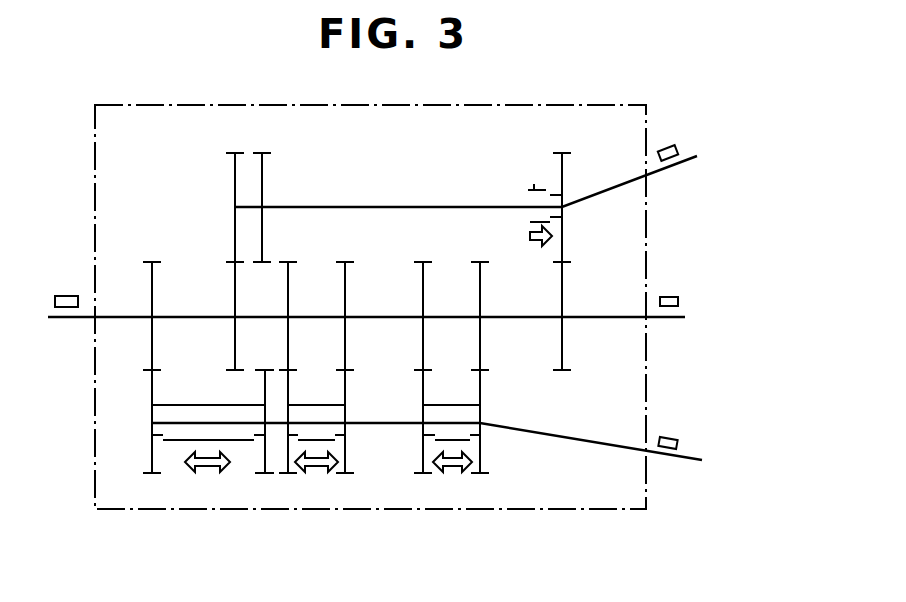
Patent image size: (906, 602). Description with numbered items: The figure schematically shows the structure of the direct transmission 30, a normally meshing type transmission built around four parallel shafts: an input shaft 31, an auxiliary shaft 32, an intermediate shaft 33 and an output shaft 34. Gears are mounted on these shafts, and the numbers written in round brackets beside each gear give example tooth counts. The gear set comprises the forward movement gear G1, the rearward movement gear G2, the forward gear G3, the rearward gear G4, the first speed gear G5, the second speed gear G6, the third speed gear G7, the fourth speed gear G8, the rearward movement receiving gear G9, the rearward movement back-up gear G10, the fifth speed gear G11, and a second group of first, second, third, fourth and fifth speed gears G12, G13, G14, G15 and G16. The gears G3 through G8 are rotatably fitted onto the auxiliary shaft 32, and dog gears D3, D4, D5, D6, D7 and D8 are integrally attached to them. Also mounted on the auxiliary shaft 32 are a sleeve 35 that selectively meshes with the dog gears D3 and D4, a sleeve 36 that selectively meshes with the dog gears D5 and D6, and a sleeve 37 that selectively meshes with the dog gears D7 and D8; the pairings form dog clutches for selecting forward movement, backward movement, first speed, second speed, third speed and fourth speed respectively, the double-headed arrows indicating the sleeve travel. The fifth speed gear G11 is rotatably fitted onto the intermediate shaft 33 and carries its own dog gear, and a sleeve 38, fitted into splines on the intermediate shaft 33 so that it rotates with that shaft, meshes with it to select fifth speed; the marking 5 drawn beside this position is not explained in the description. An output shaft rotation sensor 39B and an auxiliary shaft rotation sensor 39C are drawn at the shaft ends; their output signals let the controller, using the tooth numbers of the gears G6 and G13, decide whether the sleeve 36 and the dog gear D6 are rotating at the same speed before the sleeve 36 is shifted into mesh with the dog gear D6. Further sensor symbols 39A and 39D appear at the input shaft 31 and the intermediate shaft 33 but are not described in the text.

The direct transmission 30 is at (555, 90).
The input shaft 31 is at (63, 319).
The auxiliary shaft 32 is at (662, 455).
The intermediate shaft 33 is at (680, 166).
The output shaft 34 is at (660, 318).
The sleeve 35 is at (207, 405).
The sleeve 36 is at (300, 405).
The sleeve 37 is at (456, 405).
The sleeve 38 is at (533, 190).
The fifth speed shift element 5 is at (545, 248).
The rotation sensor 39A is at (64, 296).
The output shaft rotation sensor 39B is at (670, 297).
The auxiliary shaft rotation sensor 39C is at (680, 438).
The rotation sensor 39D is at (674, 147).
The forward movement gear G1 is at (150, 262).
The rearward movement gear G2 is at (203, 316).
The forward gear G3 is at (152, 473).
The rearward gear G4 is at (265, 473).
The first speed gear G5 is at (288, 473).
The second speed gear G6 is at (345, 473).
The third speed gear G7 is at (423, 473).
The fourth speed gear G8 is at (480, 473).
The rearward movement receiving gear G9 is at (235, 182).
The rearward movement back-up gear G10 is at (262, 182).
The fifth speed gear G11 is at (562, 178).
The first speed gear G12 is at (288, 290).
The second speed gear G13 is at (345, 290).
The third speed gear G14 is at (423, 290).
The fourth speed gear G15 is at (480, 290).
The fifth speed gear G16 is at (607, 316).
The dog gear D3 is at (157, 405).
The dog gear D4 is at (262, 408).
The dog gear D5 is at (291, 410).
The dog gear D6 is at (345, 405).
The dog gear D7 is at (428, 408).
The dog gear D8 is at (480, 410).